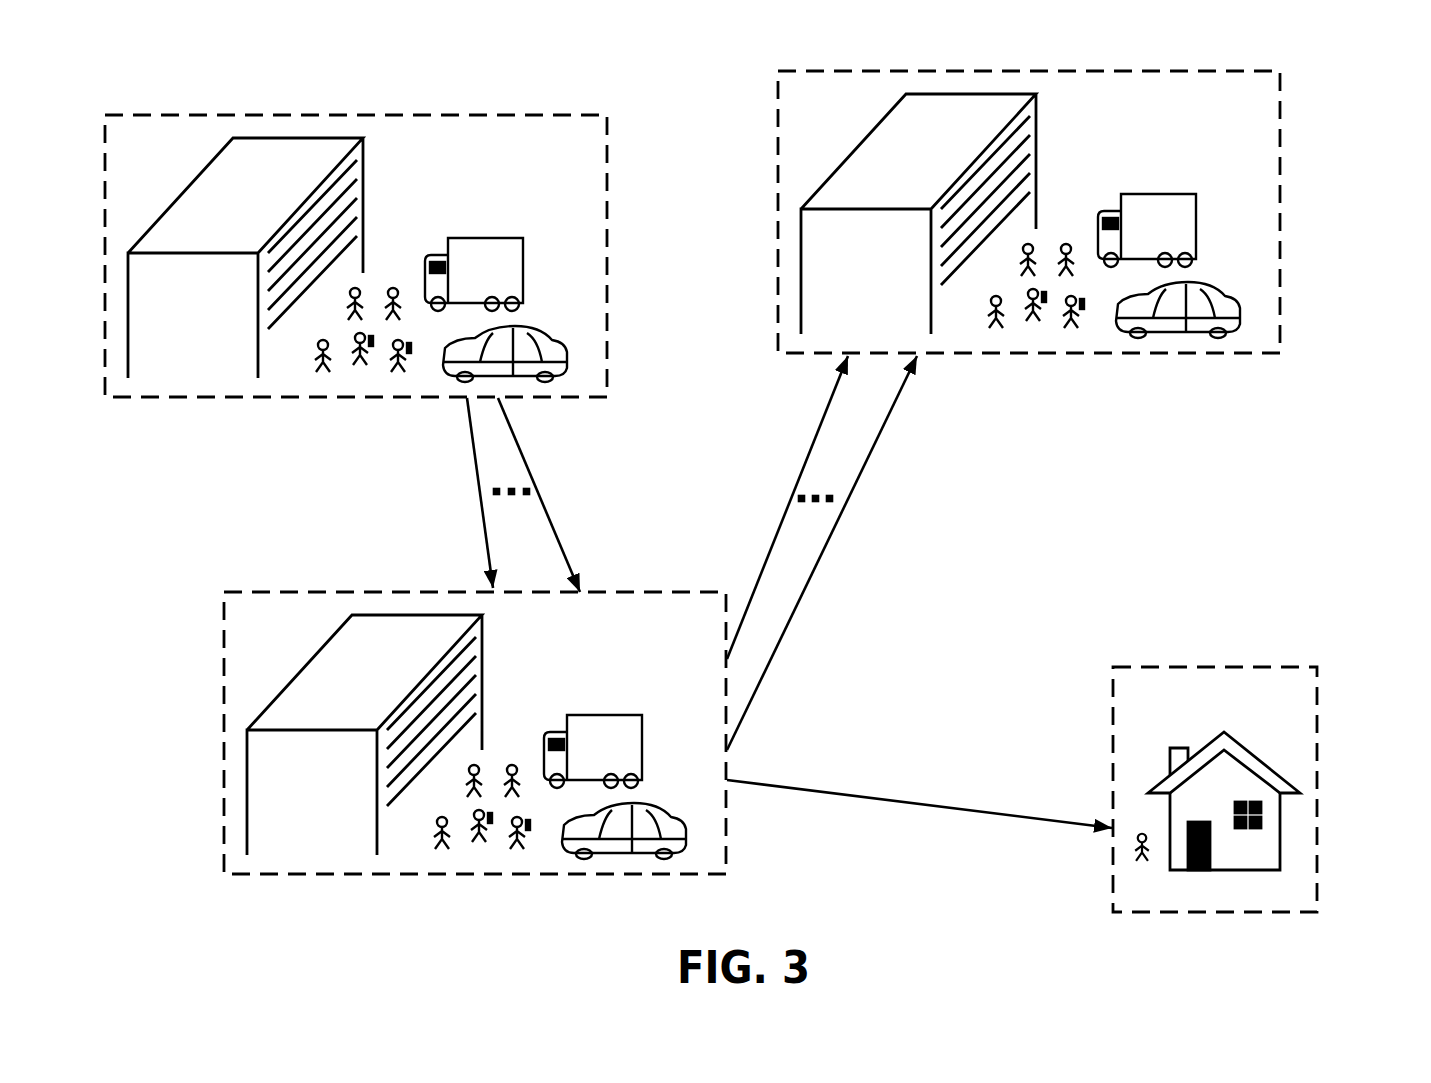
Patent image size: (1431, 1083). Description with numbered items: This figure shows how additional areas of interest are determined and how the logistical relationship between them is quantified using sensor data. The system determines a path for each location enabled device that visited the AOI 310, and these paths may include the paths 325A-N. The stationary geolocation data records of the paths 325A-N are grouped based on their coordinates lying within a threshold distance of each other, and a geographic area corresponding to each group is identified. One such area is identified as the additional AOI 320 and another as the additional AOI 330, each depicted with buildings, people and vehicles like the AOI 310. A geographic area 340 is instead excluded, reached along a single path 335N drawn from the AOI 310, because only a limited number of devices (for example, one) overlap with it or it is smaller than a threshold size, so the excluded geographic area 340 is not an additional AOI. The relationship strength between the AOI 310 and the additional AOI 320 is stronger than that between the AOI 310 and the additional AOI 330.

The AOI 310 is at (380, 873).
The additional AOI 320 is at (606, 245).
The additional AOI 330 is at (1281, 200).
The excluded geographic area 340 is at (1273, 667).
The paths 325A-N is at (440, 402).
The path 335N is at (985, 812).